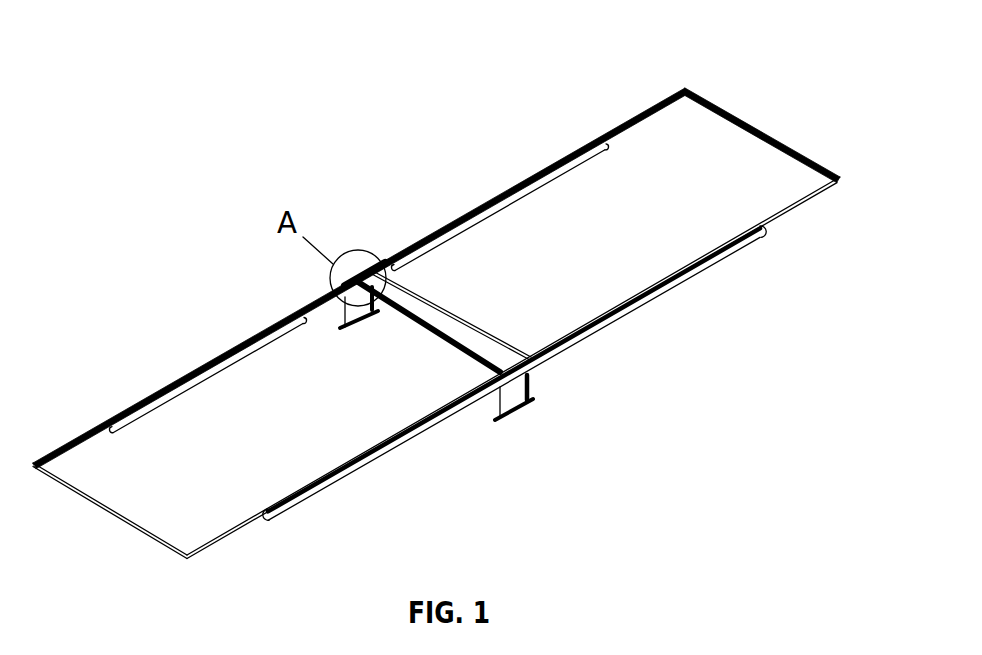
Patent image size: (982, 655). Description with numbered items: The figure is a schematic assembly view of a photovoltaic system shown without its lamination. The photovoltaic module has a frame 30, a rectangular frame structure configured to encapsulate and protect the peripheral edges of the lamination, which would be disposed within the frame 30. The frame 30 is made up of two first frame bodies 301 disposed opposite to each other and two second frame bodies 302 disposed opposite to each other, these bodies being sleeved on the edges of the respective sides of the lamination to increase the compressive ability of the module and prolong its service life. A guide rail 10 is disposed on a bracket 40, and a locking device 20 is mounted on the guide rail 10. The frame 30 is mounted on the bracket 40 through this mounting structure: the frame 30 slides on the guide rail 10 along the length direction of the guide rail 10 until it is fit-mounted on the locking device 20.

The guide rail 10 is at (517, 200).
The locking device 20 is at (540, 367).
The frame 30 is at (436, 296).
The first frame body 301 is at (627, 121).
The second frame body 302 is at (500, 350).
The bracket 40 is at (343, 330).